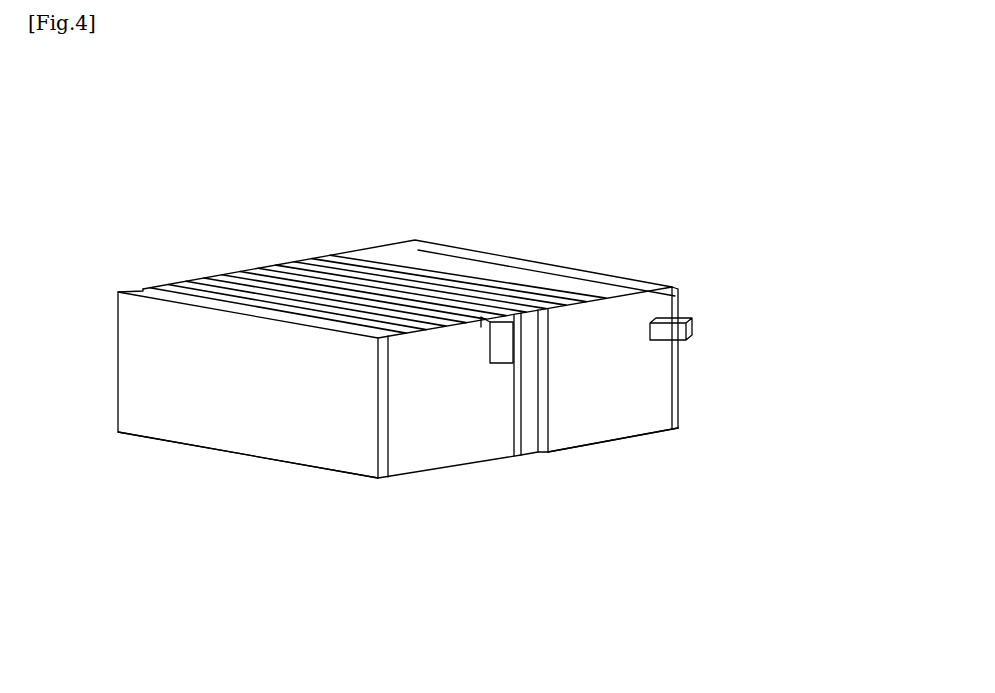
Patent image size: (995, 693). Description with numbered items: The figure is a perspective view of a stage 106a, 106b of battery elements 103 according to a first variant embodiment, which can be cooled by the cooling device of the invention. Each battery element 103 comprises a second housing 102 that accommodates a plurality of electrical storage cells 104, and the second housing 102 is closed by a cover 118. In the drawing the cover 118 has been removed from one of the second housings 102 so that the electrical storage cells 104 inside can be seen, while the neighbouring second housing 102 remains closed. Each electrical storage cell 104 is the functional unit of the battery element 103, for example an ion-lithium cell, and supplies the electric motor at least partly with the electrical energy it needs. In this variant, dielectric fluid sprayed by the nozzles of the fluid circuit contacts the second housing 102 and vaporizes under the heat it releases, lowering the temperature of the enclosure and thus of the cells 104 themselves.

The second housing 102 is at (678, 386).
The battery element 103 is at (456, 483).
The electrical storage cell 104 is at (210, 283).
The cover 118 is at (550, 270).
The stage 106a is at (741, 274).
The stage 106b is at (705, 348).